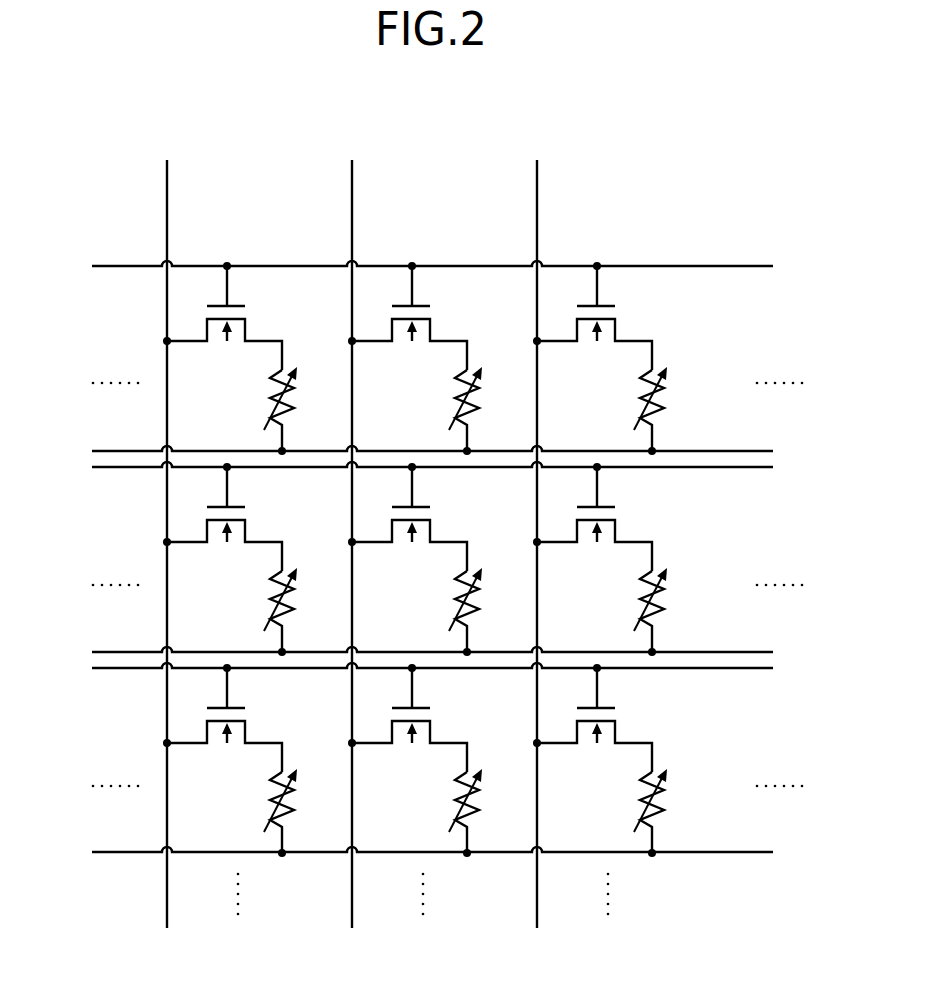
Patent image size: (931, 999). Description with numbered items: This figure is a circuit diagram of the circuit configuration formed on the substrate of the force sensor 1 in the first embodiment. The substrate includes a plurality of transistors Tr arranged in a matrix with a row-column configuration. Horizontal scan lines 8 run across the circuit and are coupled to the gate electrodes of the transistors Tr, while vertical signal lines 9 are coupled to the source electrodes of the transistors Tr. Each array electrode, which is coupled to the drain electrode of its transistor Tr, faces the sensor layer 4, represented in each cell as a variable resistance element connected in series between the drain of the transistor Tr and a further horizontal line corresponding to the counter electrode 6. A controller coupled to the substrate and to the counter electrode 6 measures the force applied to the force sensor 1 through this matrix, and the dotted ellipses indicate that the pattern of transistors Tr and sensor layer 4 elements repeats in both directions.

The force sensor 1 is at (745, 135).
The sensor layer 4 is at (672, 350).
The counter electrode 6 is at (757, 451).
The scan lines 8 is at (113, 266).
The signal lines 9 is at (170, 176).
The transistors Tr is at (259, 296).